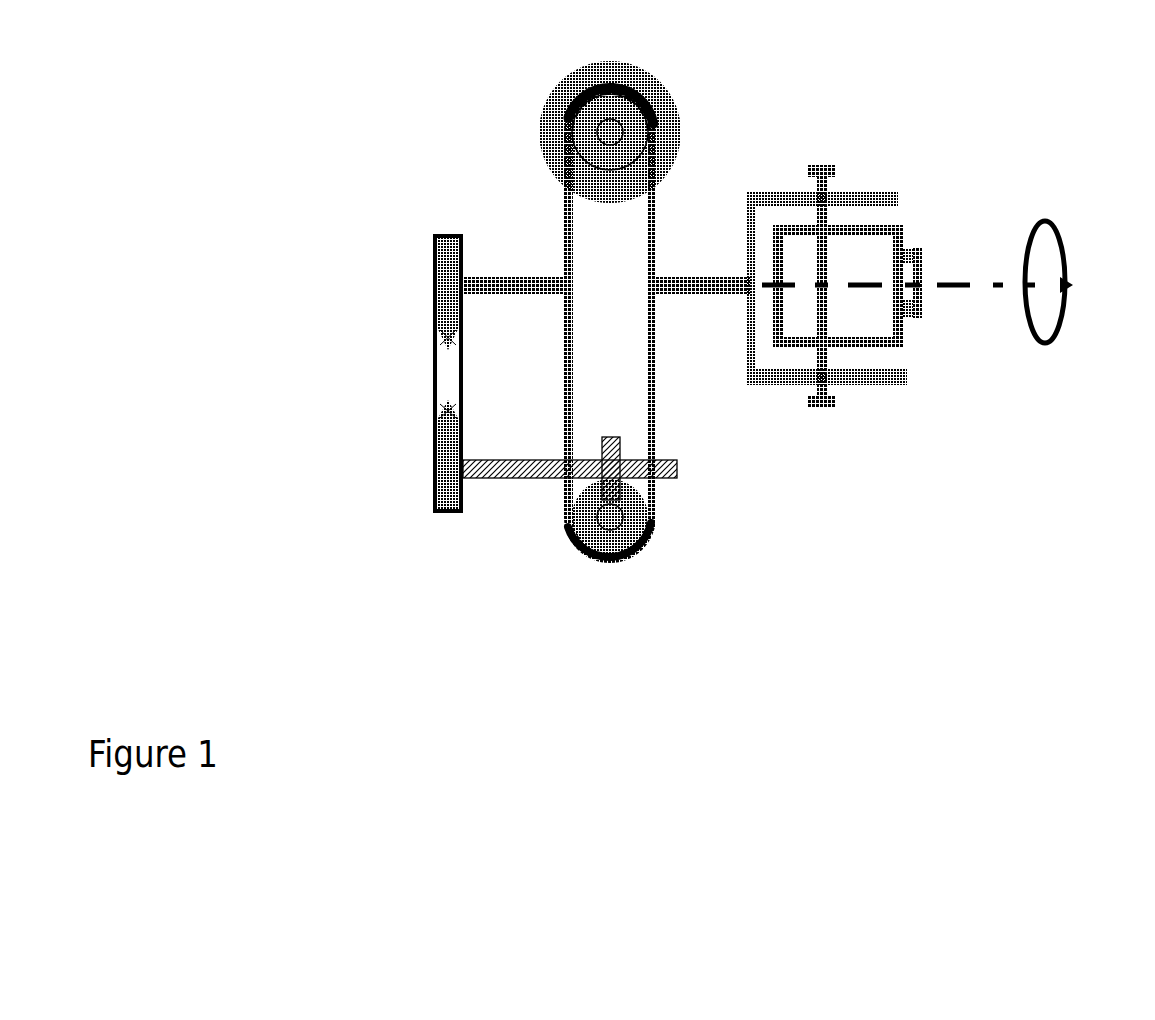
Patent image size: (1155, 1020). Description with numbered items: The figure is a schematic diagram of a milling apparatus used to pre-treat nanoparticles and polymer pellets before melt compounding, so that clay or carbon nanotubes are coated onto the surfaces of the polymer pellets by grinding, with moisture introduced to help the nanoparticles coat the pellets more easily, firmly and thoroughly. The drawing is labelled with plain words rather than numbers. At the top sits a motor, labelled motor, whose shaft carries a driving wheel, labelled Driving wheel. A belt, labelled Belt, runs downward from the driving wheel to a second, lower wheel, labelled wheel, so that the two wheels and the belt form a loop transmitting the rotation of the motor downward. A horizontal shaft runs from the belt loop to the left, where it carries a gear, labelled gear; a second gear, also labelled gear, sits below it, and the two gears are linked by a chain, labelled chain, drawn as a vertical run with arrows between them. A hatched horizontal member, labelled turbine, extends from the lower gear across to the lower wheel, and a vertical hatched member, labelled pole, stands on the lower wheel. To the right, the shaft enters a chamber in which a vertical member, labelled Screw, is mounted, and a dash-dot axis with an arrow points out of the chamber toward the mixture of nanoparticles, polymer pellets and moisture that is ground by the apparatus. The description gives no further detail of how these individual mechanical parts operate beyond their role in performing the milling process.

The driving wheel Driving wheel is at (583, 120).
The element motor is at (627, 77).
The belt Belt is at (655, 203).
The element gear is at (443, 278).
The element chain is at (432, 383).
The element turbine is at (613, 452).
The element pole is at (600, 527).
The element wheel is at (637, 533).
The screw Screw is at (822, 407).